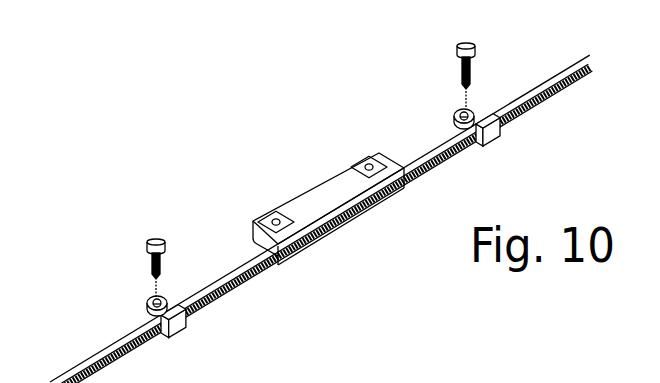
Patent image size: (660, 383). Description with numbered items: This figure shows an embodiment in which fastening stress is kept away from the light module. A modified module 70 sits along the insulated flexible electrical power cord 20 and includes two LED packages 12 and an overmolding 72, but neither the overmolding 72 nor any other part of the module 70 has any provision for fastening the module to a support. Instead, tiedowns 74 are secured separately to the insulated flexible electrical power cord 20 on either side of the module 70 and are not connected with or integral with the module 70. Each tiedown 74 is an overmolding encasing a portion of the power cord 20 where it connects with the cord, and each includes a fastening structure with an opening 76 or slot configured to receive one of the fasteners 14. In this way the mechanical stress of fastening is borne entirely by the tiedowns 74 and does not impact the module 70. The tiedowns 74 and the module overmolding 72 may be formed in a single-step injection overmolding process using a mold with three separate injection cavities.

The LED package 12 is at (275, 219).
The fastener 14 is at (147, 243).
The insulated flexible electrical power cord 20 is at (568, 72).
The modified module 70 is at (312, 162).
The overmolding 72 is at (348, 218).
The tiedown 74 is at (184, 336).
The opening 76 is at (152, 300).